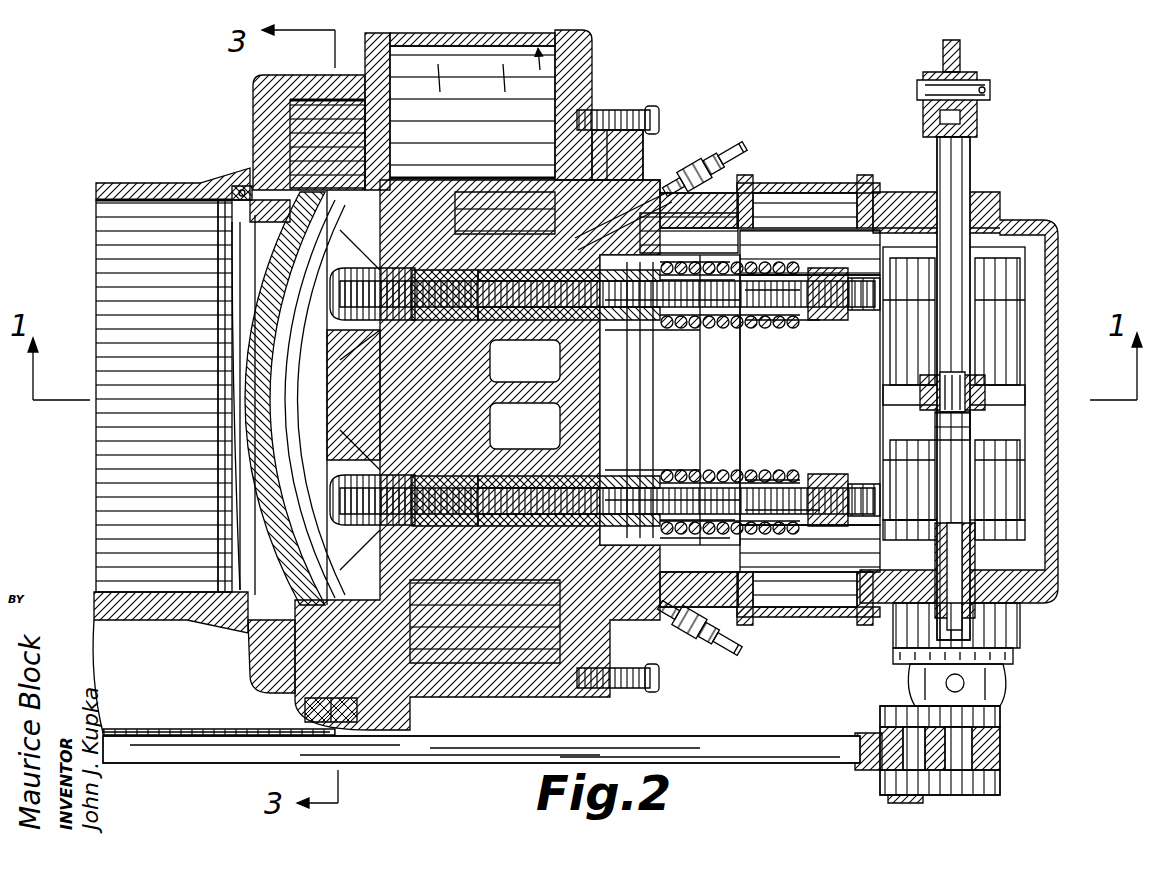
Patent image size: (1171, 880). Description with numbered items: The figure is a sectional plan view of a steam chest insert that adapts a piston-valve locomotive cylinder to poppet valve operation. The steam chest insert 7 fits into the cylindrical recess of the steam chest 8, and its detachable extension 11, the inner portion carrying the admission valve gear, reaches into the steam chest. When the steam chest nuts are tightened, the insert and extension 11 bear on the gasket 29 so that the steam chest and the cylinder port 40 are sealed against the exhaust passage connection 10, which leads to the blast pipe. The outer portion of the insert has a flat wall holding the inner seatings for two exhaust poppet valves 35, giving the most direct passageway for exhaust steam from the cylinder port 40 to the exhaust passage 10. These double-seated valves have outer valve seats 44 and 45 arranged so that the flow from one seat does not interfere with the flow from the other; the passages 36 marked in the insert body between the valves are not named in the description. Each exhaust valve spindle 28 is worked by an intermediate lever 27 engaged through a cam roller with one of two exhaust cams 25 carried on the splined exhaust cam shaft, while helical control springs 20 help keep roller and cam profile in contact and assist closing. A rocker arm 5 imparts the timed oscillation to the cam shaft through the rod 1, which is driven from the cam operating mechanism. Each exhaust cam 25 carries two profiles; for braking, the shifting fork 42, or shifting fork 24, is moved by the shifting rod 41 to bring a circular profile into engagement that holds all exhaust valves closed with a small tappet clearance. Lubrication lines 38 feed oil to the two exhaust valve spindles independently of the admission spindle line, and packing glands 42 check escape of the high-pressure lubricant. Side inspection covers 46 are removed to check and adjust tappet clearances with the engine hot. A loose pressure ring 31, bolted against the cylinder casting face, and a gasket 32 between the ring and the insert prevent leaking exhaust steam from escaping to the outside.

The rod 1 is at (722, 757).
The rocker arm 5 is at (975, 742).
The steam chest insert 7 is at (622, 158).
The steam chest 8 is at (116, 336).
The exhaust passage connection 10 is at (516, 380).
The extension 11 is at (252, 640).
The control spring 20 is at (752, 318).
The shifting fork 24 is at (628, 455).
The exhaust cam 25 is at (1000, 466).
The intermediate lever 27 is at (840, 480).
The exhaust valve spindle 28 is at (728, 480).
The gasket 29 is at (243, 186).
The pressure ring 31 is at (600, 108).
The gasket 32 is at (646, 665).
The exhaust poppet valve 35 is at (372, 478).
The passage 36 is at (549, 456).
The lubrication line 38 is at (743, 652).
The cylinder port 40 is at (317, 128).
The shifting rod 41 is at (955, 164).
The packing gland 42 is at (987, 398).
The outer valve seat 44 is at (480, 583).
The outer valve seat 45 is at (470, 228).
The side inspection cover 46 is at (780, 607).